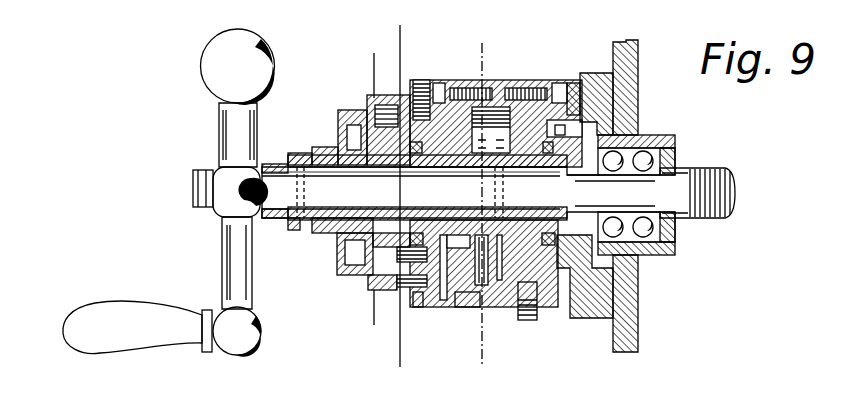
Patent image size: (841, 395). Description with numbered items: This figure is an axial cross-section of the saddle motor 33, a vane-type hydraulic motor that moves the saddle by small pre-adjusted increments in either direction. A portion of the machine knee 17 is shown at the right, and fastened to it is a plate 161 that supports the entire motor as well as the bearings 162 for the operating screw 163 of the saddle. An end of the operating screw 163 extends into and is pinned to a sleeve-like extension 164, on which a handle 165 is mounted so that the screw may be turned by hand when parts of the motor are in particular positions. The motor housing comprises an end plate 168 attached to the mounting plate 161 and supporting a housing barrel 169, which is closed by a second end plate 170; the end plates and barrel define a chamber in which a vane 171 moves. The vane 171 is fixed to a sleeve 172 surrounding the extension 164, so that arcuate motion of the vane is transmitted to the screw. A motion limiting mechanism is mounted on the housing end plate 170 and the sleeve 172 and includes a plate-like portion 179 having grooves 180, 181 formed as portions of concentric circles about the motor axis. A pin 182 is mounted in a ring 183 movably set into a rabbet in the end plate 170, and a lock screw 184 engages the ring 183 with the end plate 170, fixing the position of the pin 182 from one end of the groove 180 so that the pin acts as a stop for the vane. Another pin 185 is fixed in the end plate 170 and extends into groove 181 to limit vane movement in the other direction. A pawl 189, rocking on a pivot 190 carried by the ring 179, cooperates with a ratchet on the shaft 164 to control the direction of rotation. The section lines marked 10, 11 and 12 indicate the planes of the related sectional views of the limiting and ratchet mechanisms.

The handle 165 is at (228, 131).
The sleeve 172 is at (450, 215).
The pawl 189 is at (366, 109).
The pivot 190 is at (383, 108).
The saddle motor 33 is at (497, 80).
The lock screw 184 is at (421, 82).
The second end plate 170 is at (440, 85).
The housing barrel 169 is at (508, 84).
The end plate 168 is at (558, 84).
The plate 161 is at (592, 74).
The machine knee 17 is at (640, 52).
The bearings 162 is at (660, 157).
The operating screw 163 is at (717, 187).
The sleeve-like extension 164 is at (573, 178).
The pin 185 is at (397, 253).
The groove 181 is at (397, 245).
The plate-like portion 179 is at (390, 295).
The groove 180 is at (398, 291).
The pin 182 is at (420, 308).
The ring 183 is at (430, 309).
The vane 171 is at (470, 308).
The section line 12- 12 is at (363, 59).
The section line 11- 11 is at (390, 34).
The section line 10- 10 is at (472, 39).